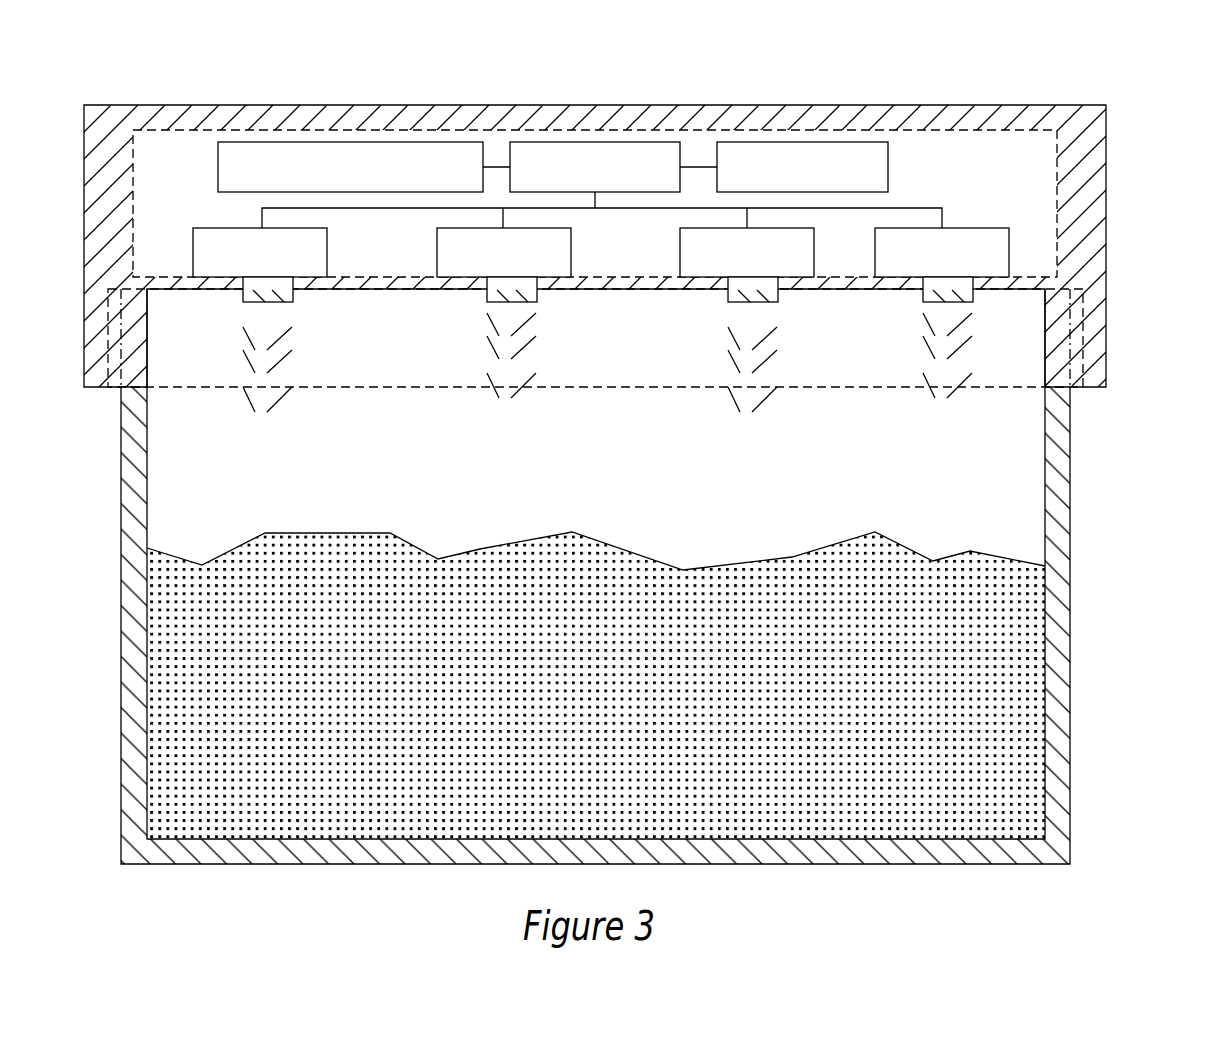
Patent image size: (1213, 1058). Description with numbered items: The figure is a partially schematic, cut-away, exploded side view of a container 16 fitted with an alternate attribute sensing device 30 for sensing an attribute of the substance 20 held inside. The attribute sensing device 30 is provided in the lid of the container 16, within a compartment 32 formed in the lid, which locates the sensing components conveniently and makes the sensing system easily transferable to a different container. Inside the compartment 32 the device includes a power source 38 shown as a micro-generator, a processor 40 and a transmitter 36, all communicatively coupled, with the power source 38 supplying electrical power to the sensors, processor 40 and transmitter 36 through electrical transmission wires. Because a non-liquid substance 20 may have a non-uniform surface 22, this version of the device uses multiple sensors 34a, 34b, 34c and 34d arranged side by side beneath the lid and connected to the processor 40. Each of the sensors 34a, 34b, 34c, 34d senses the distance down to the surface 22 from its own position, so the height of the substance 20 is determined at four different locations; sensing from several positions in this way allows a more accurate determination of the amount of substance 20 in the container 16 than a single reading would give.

The container 16 is at (1088, 453).
The substance 20 is at (1012, 690).
The non-uniform surface 22 is at (440, 558).
The attribute sensing device 30 is at (927, 164).
The compartment 32 is at (1040, 204).
The sensor 34a is at (208, 240).
The sensor 34b is at (447, 250).
The sensor 34c is at (690, 248).
The sensor 34d is at (970, 235).
The transmitter 36 is at (747, 148).
The power source 38 is at (290, 150).
The processor 40 is at (557, 148).